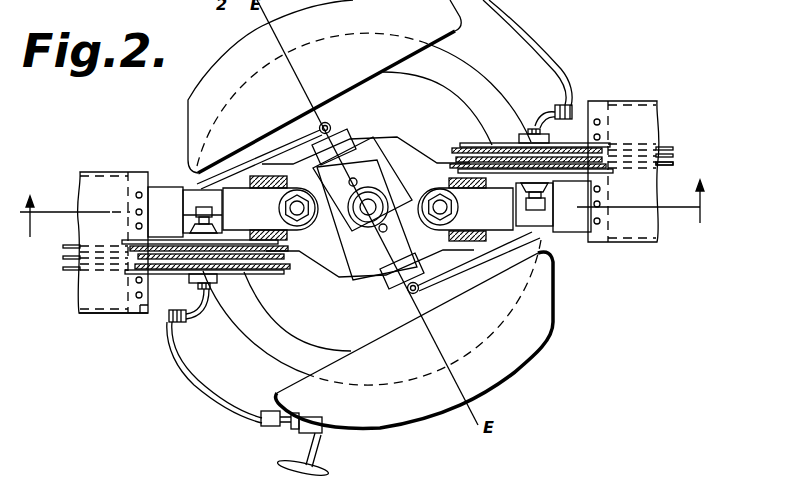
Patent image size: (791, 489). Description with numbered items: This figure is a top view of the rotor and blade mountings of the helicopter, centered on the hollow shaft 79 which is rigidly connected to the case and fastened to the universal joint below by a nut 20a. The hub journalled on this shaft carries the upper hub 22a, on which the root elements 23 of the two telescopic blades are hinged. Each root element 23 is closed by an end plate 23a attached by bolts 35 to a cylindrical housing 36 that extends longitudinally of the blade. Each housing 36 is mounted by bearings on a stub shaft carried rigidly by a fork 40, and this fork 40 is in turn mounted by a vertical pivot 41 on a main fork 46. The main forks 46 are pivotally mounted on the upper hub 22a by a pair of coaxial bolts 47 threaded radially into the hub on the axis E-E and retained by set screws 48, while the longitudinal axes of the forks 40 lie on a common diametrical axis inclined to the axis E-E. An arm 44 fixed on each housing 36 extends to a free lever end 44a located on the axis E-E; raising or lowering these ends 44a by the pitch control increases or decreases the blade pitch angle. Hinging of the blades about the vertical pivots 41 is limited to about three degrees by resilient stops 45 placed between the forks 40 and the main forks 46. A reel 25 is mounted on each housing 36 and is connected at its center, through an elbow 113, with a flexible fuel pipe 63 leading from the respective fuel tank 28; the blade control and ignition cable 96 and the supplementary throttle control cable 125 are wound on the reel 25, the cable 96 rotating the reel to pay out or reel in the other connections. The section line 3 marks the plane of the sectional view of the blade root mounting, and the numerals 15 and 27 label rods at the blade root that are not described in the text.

The section line 3- 3 is at (365, 199).
The tie rod 15 is at (672, 166).
The nut 20a is at (237, 53).
The upper hub 22a is at (368, 178).
The root element 23 is at (99, 315).
The end plate 23a is at (127, 318).
The reel 25 is at (177, 272).
The rods 27 is at (668, 146).
The fuel tank 28 is at (508, 362).
The bolts 35 is at (143, 211).
The cylindrical housing 36 is at (166, 186).
The fork 40 is at (244, 211).
The vertical pivot 41 is at (290, 209).
The arm 44 is at (245, 150).
The free end 44a is at (329, 123).
The resilient stops 45 is at (296, 242).
The main fork 46 is at (420, 157).
The coaxial bolts 47 is at (345, 132).
The set screws 48 is at (312, 250).
The flexible fuel pipe 63 is at (522, 38).
The hollow shaft 79 is at (380, 199).
The blade control and ignition cable 96 is at (113, 242).
The elbow 113 is at (543, 118).
The supplementary throttle control cable 125 is at (118, 299).